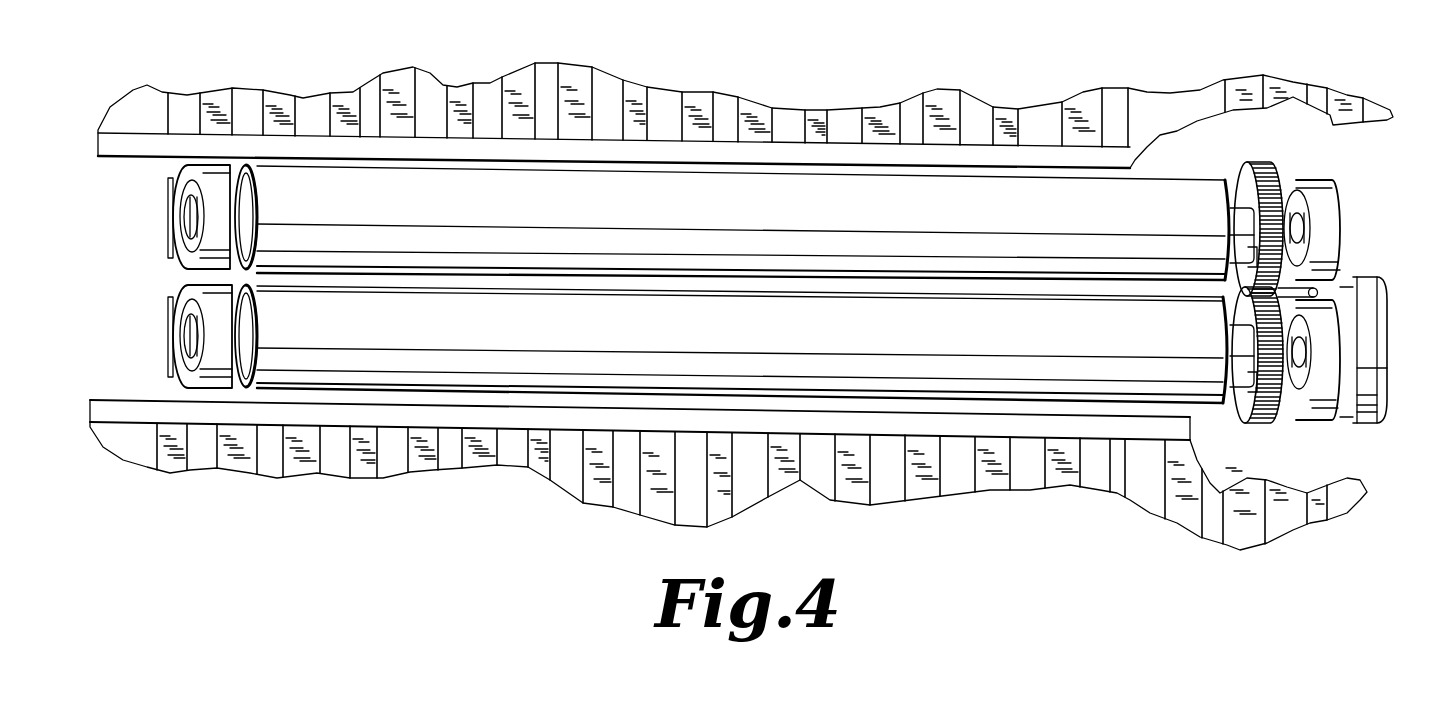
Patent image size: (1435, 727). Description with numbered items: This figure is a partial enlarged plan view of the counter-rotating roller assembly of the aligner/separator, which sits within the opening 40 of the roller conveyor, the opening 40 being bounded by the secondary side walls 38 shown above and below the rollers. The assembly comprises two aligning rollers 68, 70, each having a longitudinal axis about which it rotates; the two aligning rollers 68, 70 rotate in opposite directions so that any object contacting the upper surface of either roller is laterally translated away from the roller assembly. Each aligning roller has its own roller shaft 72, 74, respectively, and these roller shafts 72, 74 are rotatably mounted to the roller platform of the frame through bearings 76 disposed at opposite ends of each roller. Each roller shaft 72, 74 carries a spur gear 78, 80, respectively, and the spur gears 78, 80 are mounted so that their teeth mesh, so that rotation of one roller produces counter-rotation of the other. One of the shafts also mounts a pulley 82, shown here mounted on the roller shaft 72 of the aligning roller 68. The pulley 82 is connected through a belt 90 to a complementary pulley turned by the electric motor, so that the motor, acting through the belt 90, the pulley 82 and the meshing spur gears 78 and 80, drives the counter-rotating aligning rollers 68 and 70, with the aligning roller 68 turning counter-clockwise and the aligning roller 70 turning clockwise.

The secondary side wall 38 is at (745, 147).
The opening 40 is at (1187, 156).
The aligning roller 68 is at (863, 351).
The aligning roller 70 is at (817, 220).
The roller shaft 72 is at (240, 380).
The roller shaft 74 is at (247, 207).
The bearing 76 is at (218, 182).
The spur gear 78 is at (1265, 420).
The spur gear 80 is at (1260, 167).
The pulley 82 is at (1386, 338).
The belt 90 is at (1342, 265).